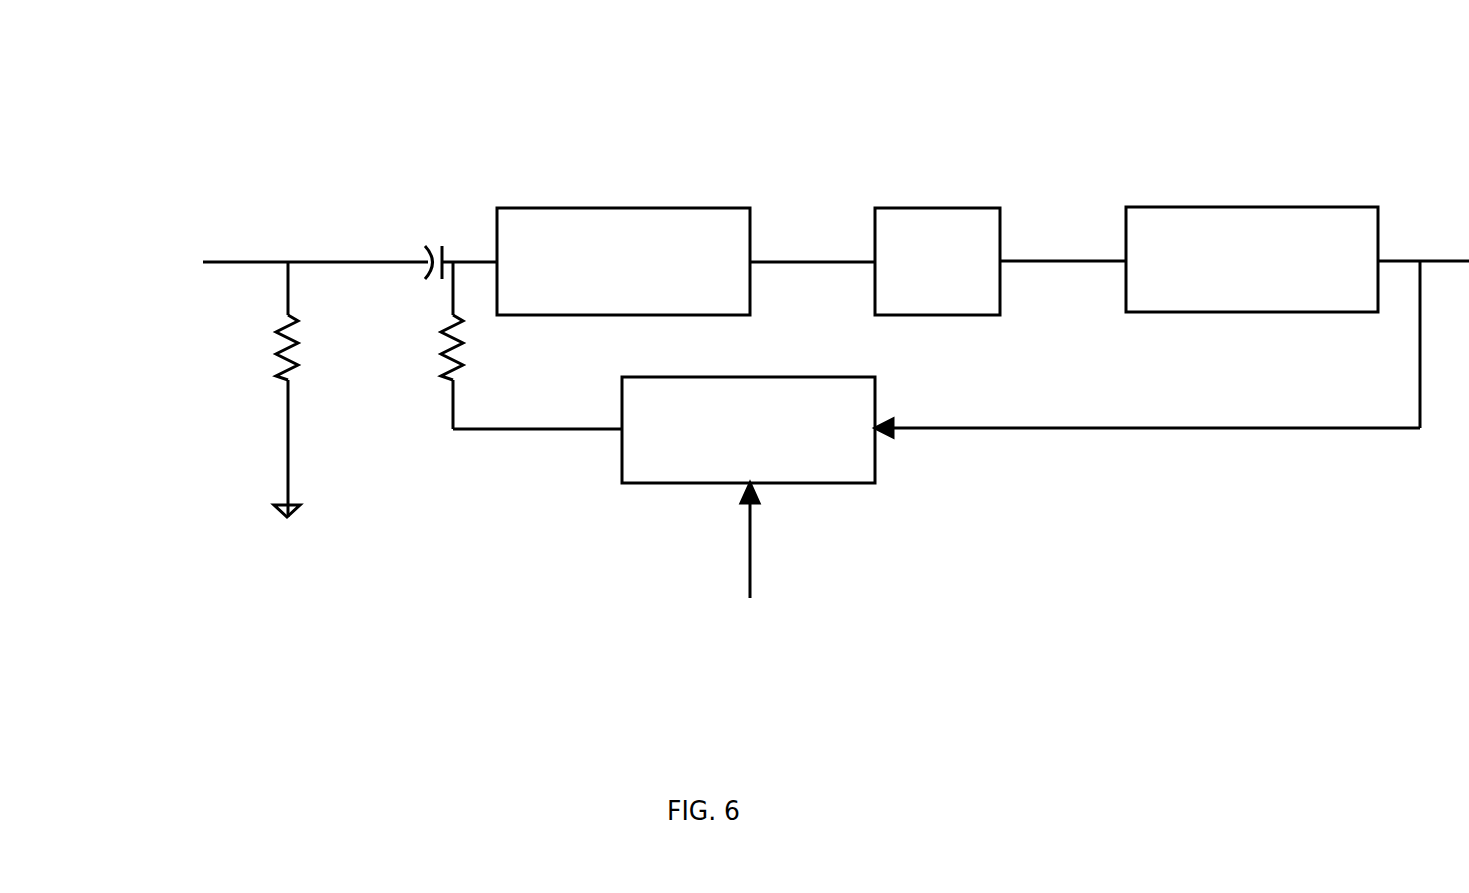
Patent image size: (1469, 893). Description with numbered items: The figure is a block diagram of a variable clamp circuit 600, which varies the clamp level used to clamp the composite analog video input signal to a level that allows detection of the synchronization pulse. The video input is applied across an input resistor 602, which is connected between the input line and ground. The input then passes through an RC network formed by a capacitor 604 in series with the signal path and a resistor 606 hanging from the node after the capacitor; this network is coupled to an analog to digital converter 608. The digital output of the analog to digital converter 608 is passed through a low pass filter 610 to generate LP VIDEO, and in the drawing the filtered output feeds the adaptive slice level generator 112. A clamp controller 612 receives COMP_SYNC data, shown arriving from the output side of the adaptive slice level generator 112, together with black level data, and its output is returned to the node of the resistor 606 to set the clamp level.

The variable clamp circuit 600 is at (757, 143).
The input resistor 602 is at (308, 365).
The capacitor 604 is at (433, 235).
The resistor 606 is at (438, 362).
The analog to digital converter 608 is at (623, 207).
The low pass filter 610 is at (893, 207).
The clamp controller 612 is at (707, 377).
The adaptive slice level generator 112 is at (1210, 207).